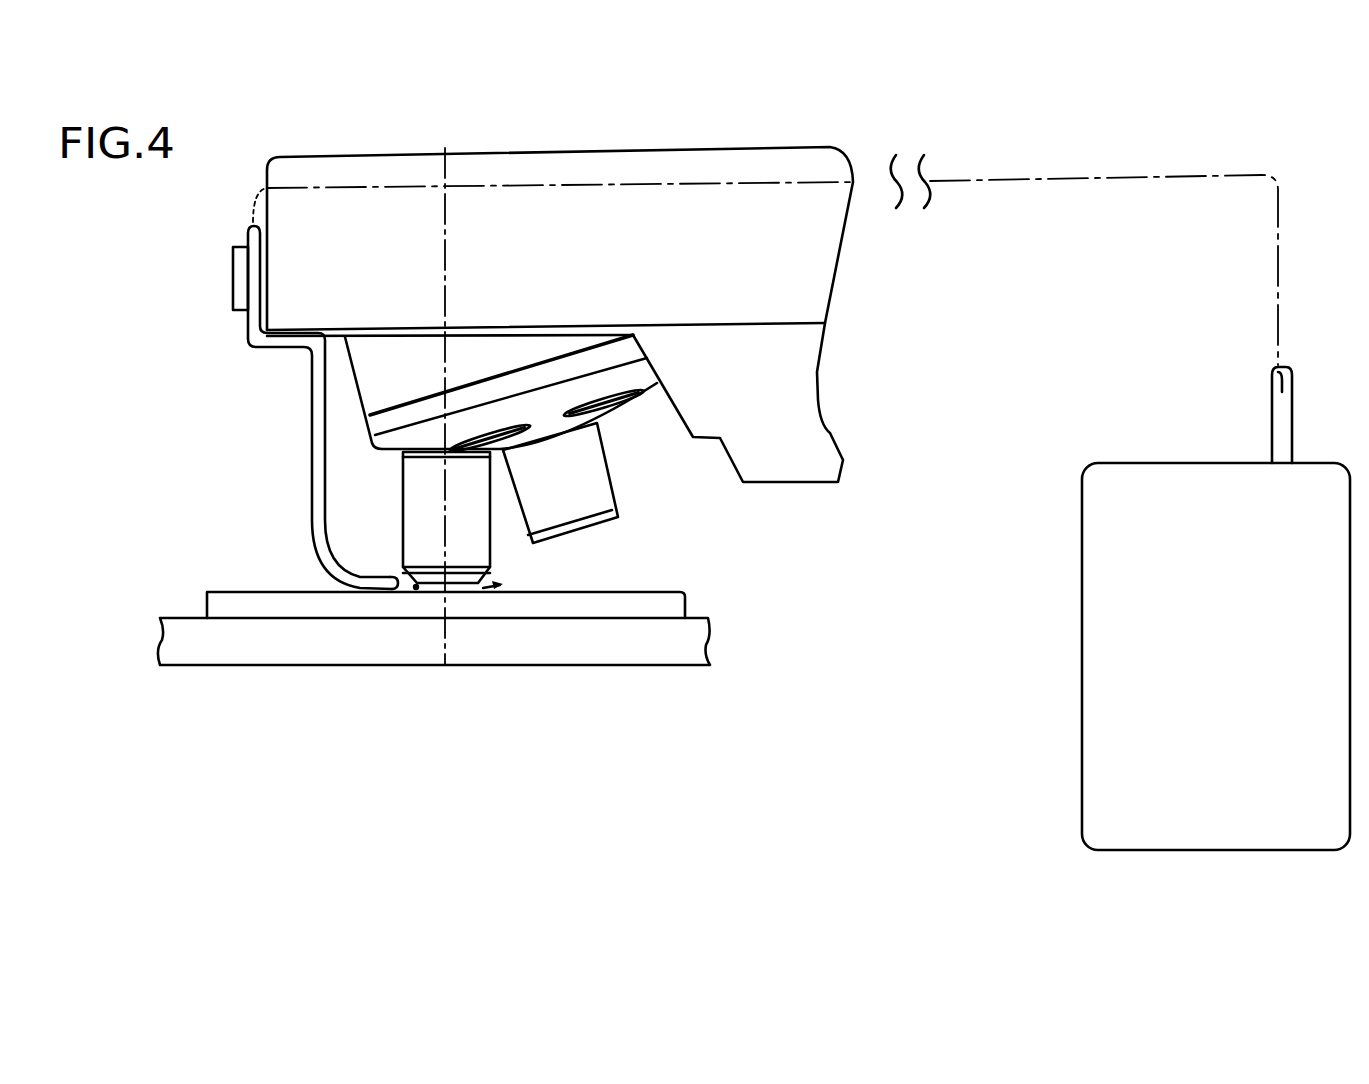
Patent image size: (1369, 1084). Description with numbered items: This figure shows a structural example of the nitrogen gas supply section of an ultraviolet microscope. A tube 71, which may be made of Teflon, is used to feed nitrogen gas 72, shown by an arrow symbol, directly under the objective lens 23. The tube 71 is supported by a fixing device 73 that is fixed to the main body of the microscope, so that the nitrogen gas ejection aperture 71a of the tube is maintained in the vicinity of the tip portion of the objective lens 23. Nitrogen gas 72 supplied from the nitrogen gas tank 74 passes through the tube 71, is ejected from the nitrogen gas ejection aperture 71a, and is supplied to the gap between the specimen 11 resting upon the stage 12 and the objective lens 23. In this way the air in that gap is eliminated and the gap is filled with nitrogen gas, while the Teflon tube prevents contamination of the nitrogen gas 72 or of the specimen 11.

The specimen 11 is at (643, 590).
The stage 12 is at (250, 635).
The objective lens 23 is at (417, 513).
The tube 71 is at (322, 456).
The nitrogen gas ejection aperture 71a is at (383, 592).
The nitrogen gas 72 is at (493, 592).
The fixing device 73 is at (238, 258).
The nitrogen gas tank 74 is at (1147, 648).